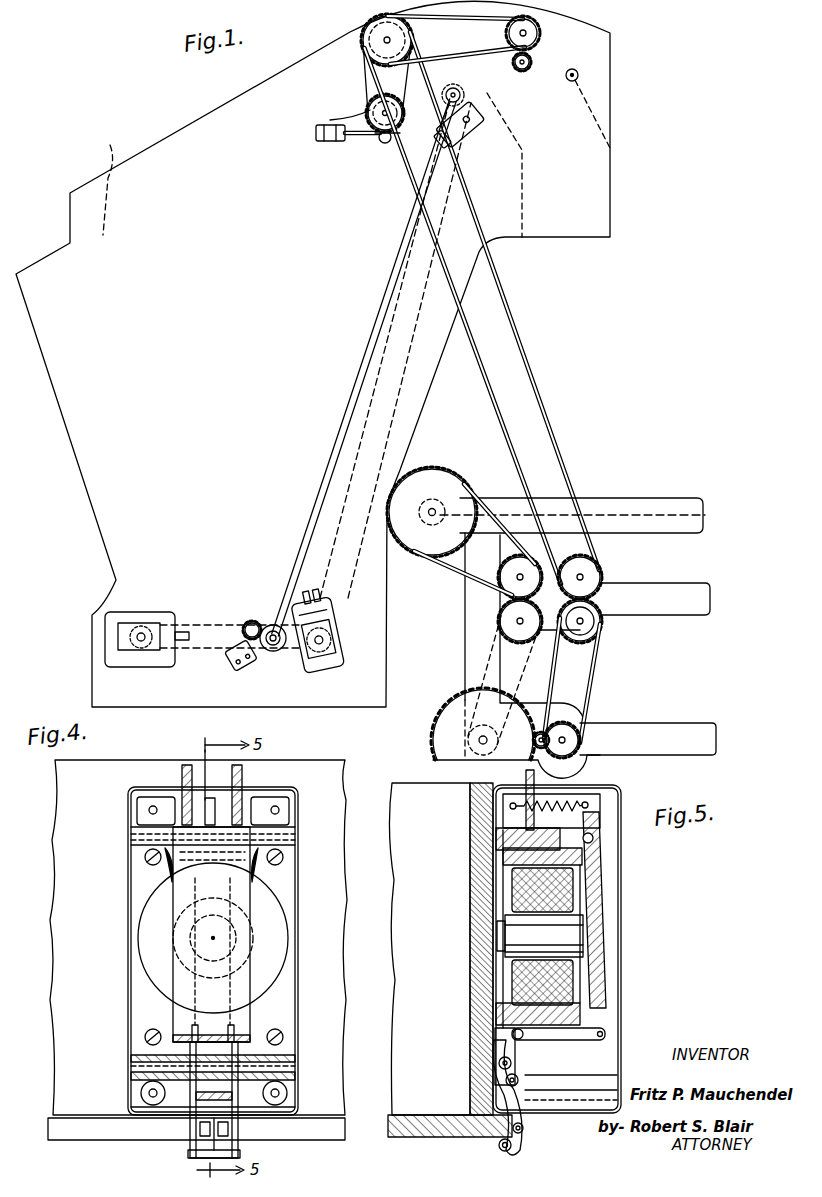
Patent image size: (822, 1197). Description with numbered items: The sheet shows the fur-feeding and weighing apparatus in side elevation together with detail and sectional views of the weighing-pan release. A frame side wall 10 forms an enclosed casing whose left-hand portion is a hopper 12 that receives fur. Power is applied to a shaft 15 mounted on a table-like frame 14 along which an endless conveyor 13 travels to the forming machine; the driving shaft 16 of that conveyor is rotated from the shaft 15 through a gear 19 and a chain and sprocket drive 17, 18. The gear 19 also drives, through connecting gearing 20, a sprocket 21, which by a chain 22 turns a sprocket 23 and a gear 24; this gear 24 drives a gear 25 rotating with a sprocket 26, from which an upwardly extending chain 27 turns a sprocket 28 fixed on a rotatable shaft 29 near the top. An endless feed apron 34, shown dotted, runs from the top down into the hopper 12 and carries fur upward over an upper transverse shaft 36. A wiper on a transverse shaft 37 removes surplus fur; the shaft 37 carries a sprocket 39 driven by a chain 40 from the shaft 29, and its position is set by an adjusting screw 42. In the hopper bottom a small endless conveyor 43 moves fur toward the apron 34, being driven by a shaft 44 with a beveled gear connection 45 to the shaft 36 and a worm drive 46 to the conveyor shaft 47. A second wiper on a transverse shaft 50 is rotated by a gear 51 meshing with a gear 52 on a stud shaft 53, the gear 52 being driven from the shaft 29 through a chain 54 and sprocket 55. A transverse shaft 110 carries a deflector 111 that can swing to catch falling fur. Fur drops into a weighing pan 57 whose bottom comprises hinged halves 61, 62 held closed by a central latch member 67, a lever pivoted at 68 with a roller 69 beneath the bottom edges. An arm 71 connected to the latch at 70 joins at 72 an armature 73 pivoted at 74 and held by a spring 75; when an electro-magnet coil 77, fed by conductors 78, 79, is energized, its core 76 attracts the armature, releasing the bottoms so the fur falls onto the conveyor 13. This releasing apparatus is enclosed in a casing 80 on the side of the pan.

In FIG. 1, the side wall 10 is at (313, 354).
In FIG. 1, the hopper 12 is at (110, 145).
In FIG. 1, the endless conveyor 13 is at (640, 498).
In FIG. 1, the table-like frame 14 is at (665, 533).
In FIG. 1, the shaft 15 is at (530, 742).
In FIG. 1, the driving shaft 16 is at (432, 508).
In FIG. 1, the chain and sprocket drive 17 is at (500, 620).
In FIG. 1, the chain and sprocket drive 18 is at (432, 555).
In FIG. 1, the gear 19 is at (541, 732).
In FIG. 1, the connecting gearing 20 is at (582, 744).
In FIG. 1, the sprocket 21 is at (570, 730).
In FIG. 1, the chain 22 is at (594, 668).
In FIG. 1, the sprocket 23 is at (592, 632).
In FIG. 1, the gear 24 is at (603, 622).
In FIG. 1, the gear 25 is at (602, 593).
In FIG. 1, the sprocket 26 is at (602, 570).
In FIG. 1, the chain 27 is at (528, 350).
In FIG. 1, the sprocket 28 is at (370, 80).
In FIG. 1, the rotatable shaft 29 is at (387, 40).
In FIG. 1, the feed apron 34 is at (370, 400).
In FIG. 1, the upper transverse shaft 36 is at (464, 92).
In FIG. 1, the transverse shaft 37 is at (380, 142).
In FIG. 1, the sprocket 39 is at (330, 120).
In FIG. 1, the chain 40 is at (330, 118).
In FIG. 1, the adjusting screw 42 is at (336, 141).
In FIG. 1, the small endless conveyor 43 is at (200, 625).
In FIG. 1, the shaft 44 is at (372, 335).
In FIG. 1, the beveled gear connection 45 is at (468, 108).
In FIG. 1, the worm drive 46 is at (252, 622).
In FIG. 1, the conveyor shaft 47 is at (273, 650).
In FIG. 1, the transverse shaft 50 is at (532, 62).
In FIG. 1, the gear 51 is at (528, 70).
In FIG. 1, the gear 52 is at (526, 35).
In FIG. 1, the stud shaft 53 is at (538, 30).
In FIG. 1, the chain 54 is at (480, 19).
In FIG. 1, the sprocket 55 is at (500, 48).
In FIG. 4, the weighing pan 57 is at (198, 937).
In FIG. 5, the weighing pan 57 is at (470, 893).
In FIG. 4, the hinged bottom half 61 is at (96, 1135).
In FIG. 4, the hinged bottom half 62 is at (313, 1132).
In FIG. 5, the hinged bottom half 62 is at (414, 1122).
In FIG. 4, the latch member 67 is at (240, 1108).
In FIG. 5, the latch member 67 is at (522, 1118).
In FIG. 4, the pivot 68 is at (210, 1062).
In FIG. 5, the pivot 68 is at (518, 1062).
In FIG. 5, the roller 69 is at (500, 1148).
In FIG. 5, the connection 70 is at (535, 1035).
In FIG. 4, the arm 71 is at (230, 1025).
In FIG. 5, the arm 71 is at (590, 1036).
In FIG. 4, the connection 72 is at (192, 1032).
In FIG. 5, the connection 72 is at (607, 1033).
In FIG. 4, the armature 73 is at (255, 945).
In FIG. 5, the armature 73 is at (590, 982).
In FIG. 4, the pivot 74 is at (215, 855).
In FIG. 5, the pivot 74 is at (596, 838).
In FIG. 5, the spring 75 is at (565, 800).
In FIG. 4, the core 76 is at (195, 940).
In FIG. 5, the core 76 is at (570, 935).
In FIG. 4, the electro-magnet coil 77 is at (260, 975).
In FIG. 5, the electro-magnet coil 77 is at (575, 888).
In FIG. 4, the conductor 78 is at (242, 773).
In FIG. 5, the conductor 78 is at (526, 778).
In FIG. 4, the conductor 79 is at (182, 773).
In FIG. 4, the casing 80 is at (305, 1000).
In FIG. 5, the casing 80 is at (621, 945).
In FIG. 1, the transverse shaft 110 is at (578, 75).
In FIG. 1, the deflector 111 is at (595, 120).